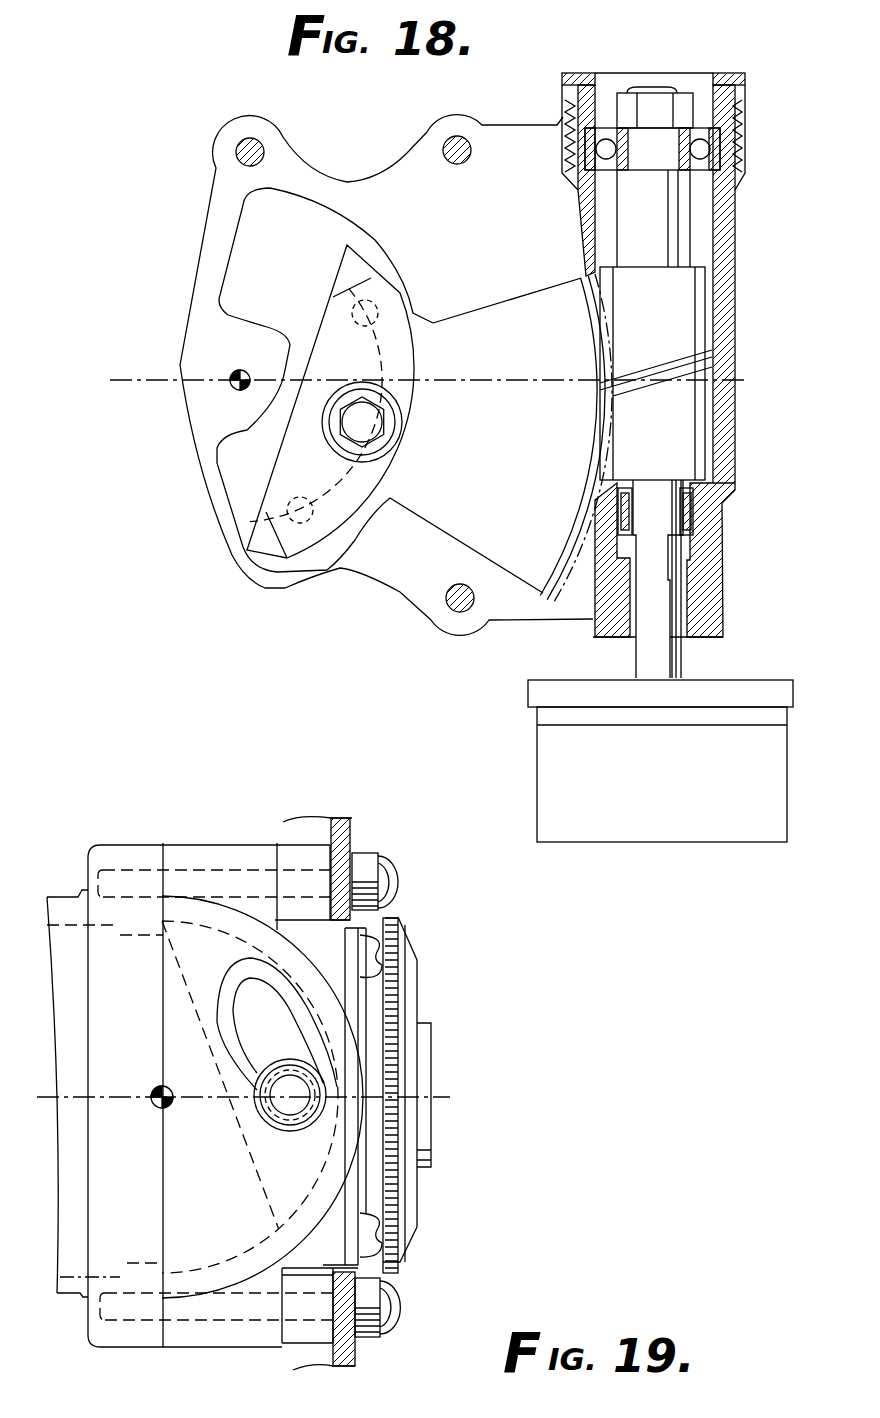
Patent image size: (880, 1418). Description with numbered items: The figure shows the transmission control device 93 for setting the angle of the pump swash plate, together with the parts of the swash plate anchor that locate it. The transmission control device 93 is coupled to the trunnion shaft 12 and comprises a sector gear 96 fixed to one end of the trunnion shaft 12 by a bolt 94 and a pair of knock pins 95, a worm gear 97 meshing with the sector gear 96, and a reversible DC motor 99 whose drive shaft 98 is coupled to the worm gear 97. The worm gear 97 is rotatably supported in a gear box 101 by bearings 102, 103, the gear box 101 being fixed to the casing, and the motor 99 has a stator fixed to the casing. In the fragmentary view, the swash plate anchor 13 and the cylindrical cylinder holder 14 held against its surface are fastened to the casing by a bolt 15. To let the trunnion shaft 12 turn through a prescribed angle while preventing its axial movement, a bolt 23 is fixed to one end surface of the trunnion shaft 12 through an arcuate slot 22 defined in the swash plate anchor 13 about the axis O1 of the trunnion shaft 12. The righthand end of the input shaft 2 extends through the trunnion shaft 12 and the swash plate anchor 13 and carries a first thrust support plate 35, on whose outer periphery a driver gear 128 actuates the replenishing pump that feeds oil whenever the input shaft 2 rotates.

In FIG. 18, the axis of the trunnion shaft O1 is at (235, 372).
In FIG. 19, the axis of the trunnion shaft O1 is at (160, 1110).
In FIG. 19, the input shaft 2 is at (430, 1138).
In FIG. 18, the trunnion shaft 12 is at (318, 322).
In FIG. 19, the trunnion shaft 12 is at (195, 974).
In FIG. 19, the swash plate anchor 13 is at (217, 1337).
In FIG. 19, the cylinder holder 14 is at (128, 1337).
In FIG. 19, the bolt 15 is at (394, 872).
In FIG. 19, the arcuate slot 22 is at (250, 1030).
In FIG. 19, the bolt 23 is at (277, 1117).
In FIG. 19, the first thrust support plate 35 is at (412, 978).
In FIG. 18, the transmission control device 93 is at (411, 626).
In FIG. 18, the bolt 94 is at (378, 418).
In FIG. 18, the knock pins 95 is at (390, 298).
In FIG. 18, the sector gear 96 is at (530, 459).
In FIG. 18, the worm gear 97 is at (667, 336).
In FIG. 18, the drive shaft 98 is at (668, 662).
In FIG. 18, the reversible DC motor 99 is at (668, 776).
In FIG. 18, the gear box 101 is at (732, 412).
In FIG. 18, the bearing 102 is at (688, 518).
In FIG. 18, the bearing 103 is at (712, 152).
In FIG. 19, the driver gear 128 is at (403, 1258).